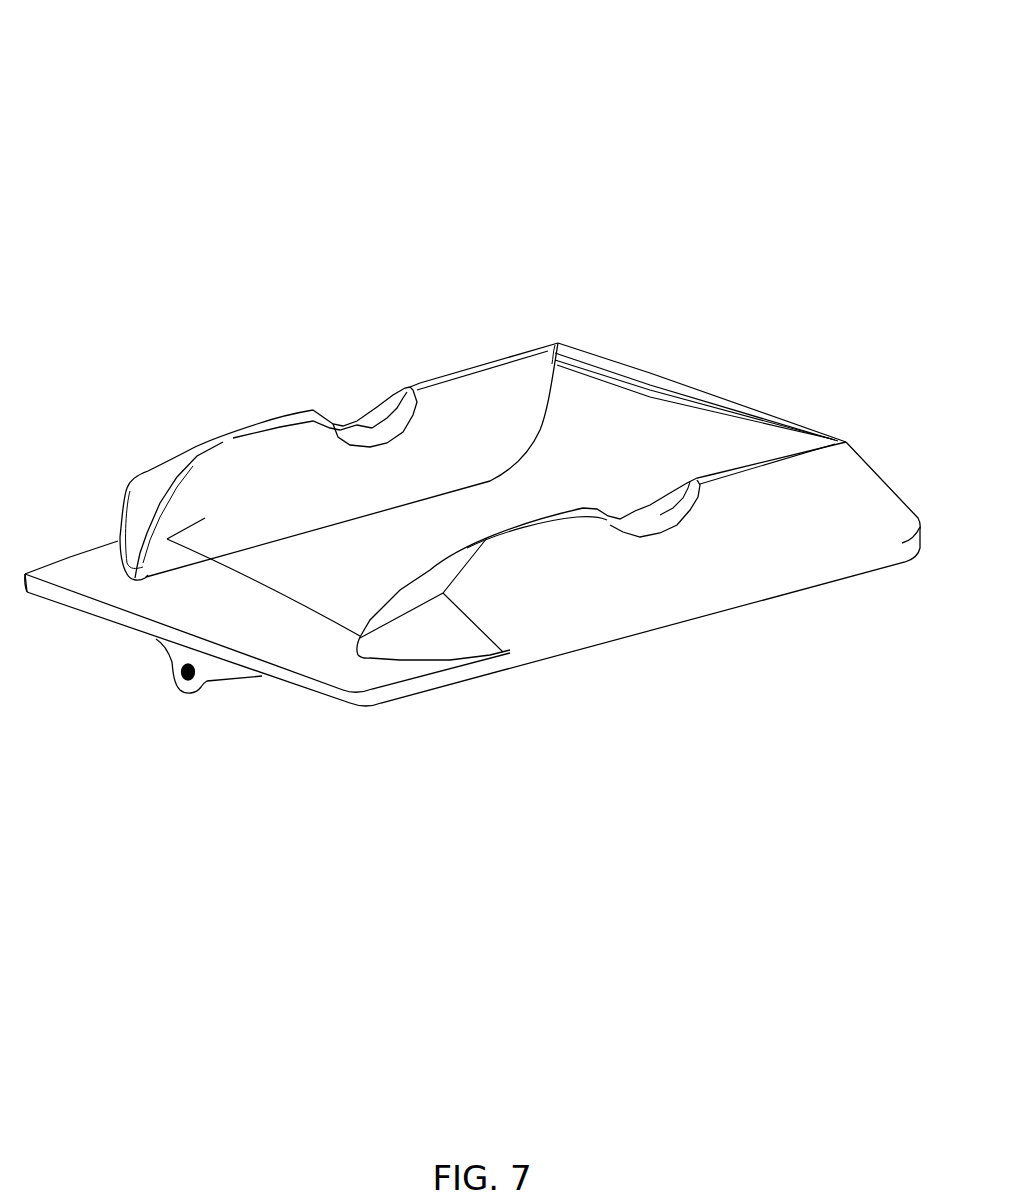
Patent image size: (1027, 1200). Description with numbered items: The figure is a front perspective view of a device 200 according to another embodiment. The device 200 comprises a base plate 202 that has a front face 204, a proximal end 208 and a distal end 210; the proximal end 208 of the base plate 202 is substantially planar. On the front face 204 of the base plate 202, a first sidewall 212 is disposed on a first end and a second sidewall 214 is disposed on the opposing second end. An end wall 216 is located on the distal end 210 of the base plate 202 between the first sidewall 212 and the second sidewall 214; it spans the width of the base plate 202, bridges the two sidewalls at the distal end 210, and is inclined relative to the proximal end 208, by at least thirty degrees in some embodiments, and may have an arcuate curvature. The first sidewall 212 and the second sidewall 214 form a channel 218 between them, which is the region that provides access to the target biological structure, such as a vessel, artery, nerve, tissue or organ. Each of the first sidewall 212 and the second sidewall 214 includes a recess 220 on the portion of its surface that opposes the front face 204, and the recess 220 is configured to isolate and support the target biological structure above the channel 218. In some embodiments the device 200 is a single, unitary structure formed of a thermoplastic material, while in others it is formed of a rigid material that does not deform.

The device 200 is at (128, 77).
The base plate 202 is at (420, 690).
The front face 204 is at (323, 578).
The proximal end 208 is at (280, 672).
The distal end 210 is at (920, 520).
The first sidewall 212 is at (570, 590).
The second sidewall 214 is at (217, 437).
The end wall 216 is at (717, 396).
The channel 218 is at (257, 583).
The recess 220 is at (360, 411).